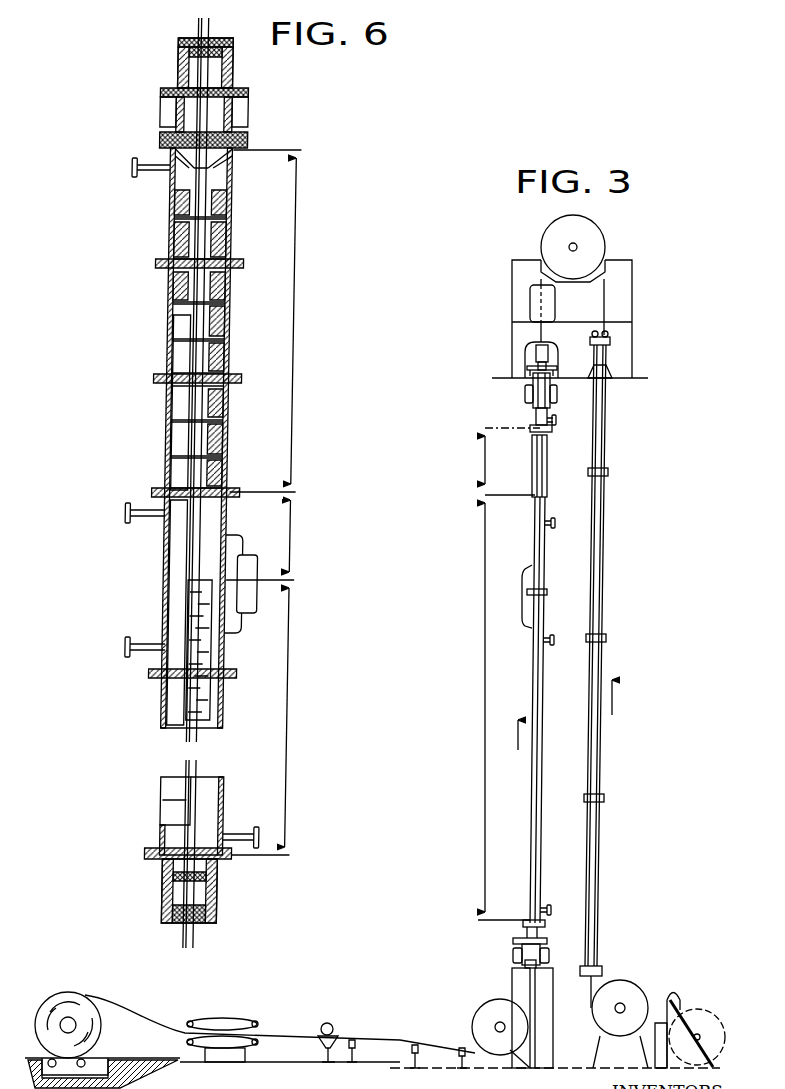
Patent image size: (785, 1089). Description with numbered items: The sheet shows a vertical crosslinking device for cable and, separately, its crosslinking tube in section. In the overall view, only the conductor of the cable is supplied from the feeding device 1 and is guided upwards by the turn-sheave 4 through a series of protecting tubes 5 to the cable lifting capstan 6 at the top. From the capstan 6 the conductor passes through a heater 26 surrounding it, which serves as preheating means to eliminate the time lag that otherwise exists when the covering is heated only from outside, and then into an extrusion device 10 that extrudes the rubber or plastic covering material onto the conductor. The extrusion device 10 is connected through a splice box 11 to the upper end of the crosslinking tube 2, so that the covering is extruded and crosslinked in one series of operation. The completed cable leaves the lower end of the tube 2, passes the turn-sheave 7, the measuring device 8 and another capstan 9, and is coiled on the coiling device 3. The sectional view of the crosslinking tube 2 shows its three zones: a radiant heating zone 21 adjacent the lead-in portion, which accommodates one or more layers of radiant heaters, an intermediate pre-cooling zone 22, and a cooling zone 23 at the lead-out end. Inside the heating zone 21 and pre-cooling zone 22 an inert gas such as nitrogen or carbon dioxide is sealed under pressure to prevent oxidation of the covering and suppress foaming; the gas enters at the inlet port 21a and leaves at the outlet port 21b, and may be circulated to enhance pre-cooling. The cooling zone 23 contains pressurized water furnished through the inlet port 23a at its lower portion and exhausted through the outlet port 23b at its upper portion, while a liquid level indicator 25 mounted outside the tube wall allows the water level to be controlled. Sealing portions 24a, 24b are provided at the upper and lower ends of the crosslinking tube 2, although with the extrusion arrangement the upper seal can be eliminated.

In FIG. 3, the feeding device 1 is at (706, 1016).
In FIG. 6, the crosslinking tube 2 is at (261, 235).
In FIG. 3, the crosslinking tube 2 is at (514, 704).
In FIG. 3, the coiling device 3 is at (82, 1005).
In FIG. 3, the turn-sheave 4 is at (635, 1000).
In FIG. 3, the protecting tubes 5 is at (600, 742).
In FIG. 3, the cable lifting capstan 6 is at (555, 235).
In FIG. 3, the turn-sheave 7 is at (475, 1020).
In FIG. 3, the measuring device 8 is at (318, 1048).
In FIG. 3, the capstan 9 is at (222, 1022).
In FIG. 3, the extrusion device 10 is at (527, 355).
In FIG. 3, the splice box 11 is at (530, 398).
In FIG. 6, the radiant heating zone 21 is at (338, 342).
In FIG. 3, the radiant heating zone 21 is at (521, 482).
In FIG. 6, the inlet port 21a is at (136, 179).
In FIG. 3, the inlet port 21a is at (558, 422).
In FIG. 6, the outlet port 21b is at (134, 526).
In FIG. 3, the outlet port 21b is at (556, 526).
In FIG. 6, the pre-cooling zone 22 is at (338, 558).
In FIG. 3, the pre-cooling zone 22 is at (522, 542).
In FIG. 6, the cooling zone 23 is at (342, 744).
In FIG. 3, the cooling zone 23 is at (517, 804).
In FIG. 6, the inlet port 23a is at (277, 832).
In FIG. 3, the inlet port 23a is at (558, 902).
In FIG. 6, the outlet port 23b is at (133, 642).
In FIG. 3, the outlet port 23b is at (555, 645).
In FIG. 6, the sealing portion 24a is at (234, 75).
In FIG. 6, the sealing portion 24b is at (232, 885).
In FIG. 3, the sealing portion 24b is at (512, 957).
In FIG. 6, the liquid level indicator 25 is at (259, 605).
In FIG. 3, the liquid level indicator 25 is at (522, 598).
In FIG. 3, the heater 26 is at (530, 300).